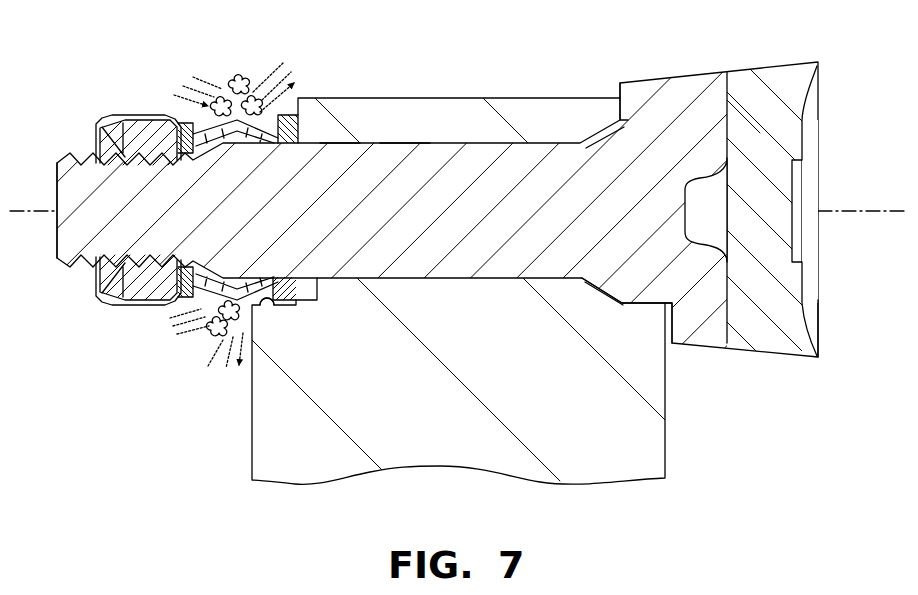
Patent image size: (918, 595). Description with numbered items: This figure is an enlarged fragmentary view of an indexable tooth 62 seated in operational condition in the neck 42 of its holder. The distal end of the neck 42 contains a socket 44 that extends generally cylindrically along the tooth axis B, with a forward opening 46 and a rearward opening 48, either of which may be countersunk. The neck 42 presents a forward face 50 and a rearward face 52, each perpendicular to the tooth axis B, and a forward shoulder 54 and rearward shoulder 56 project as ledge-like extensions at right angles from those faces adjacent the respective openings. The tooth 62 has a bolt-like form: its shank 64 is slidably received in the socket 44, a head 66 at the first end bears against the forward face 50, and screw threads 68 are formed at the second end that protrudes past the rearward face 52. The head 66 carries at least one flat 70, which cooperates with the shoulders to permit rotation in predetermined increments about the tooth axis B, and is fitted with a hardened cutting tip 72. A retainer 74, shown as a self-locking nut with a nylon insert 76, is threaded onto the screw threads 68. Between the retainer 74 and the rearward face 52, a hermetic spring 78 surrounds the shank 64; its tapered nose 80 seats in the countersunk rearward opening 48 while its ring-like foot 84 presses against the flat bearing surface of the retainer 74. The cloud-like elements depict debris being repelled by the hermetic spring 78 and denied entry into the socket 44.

The neck 42 is at (665, 445).
The socket 44 is at (383, 145).
The forward opening 46 is at (597, 143).
The rearward opening 48 is at (325, 143).
The forward face 50 is at (622, 105).
The rearward face 52 is at (297, 112).
The forward shoulder 54 is at (630, 303).
The rearward shoulder 56 is at (267, 300).
The indexable tooth 62 is at (818, 61).
The shank 64 is at (450, 262).
The head 66 is at (677, 79).
The screw threads 68 is at (60, 263).
The flat 70 is at (640, 306).
The cutting tip 72 is at (818, 315).
The retainer 74 is at (138, 116).
The nylon insert 76 is at (96, 142).
The hermetic spring 78 is at (203, 130).
The nose 80 is at (306, 128).
The foot 84 is at (190, 300).
The tooth axis B is at (846, 207).